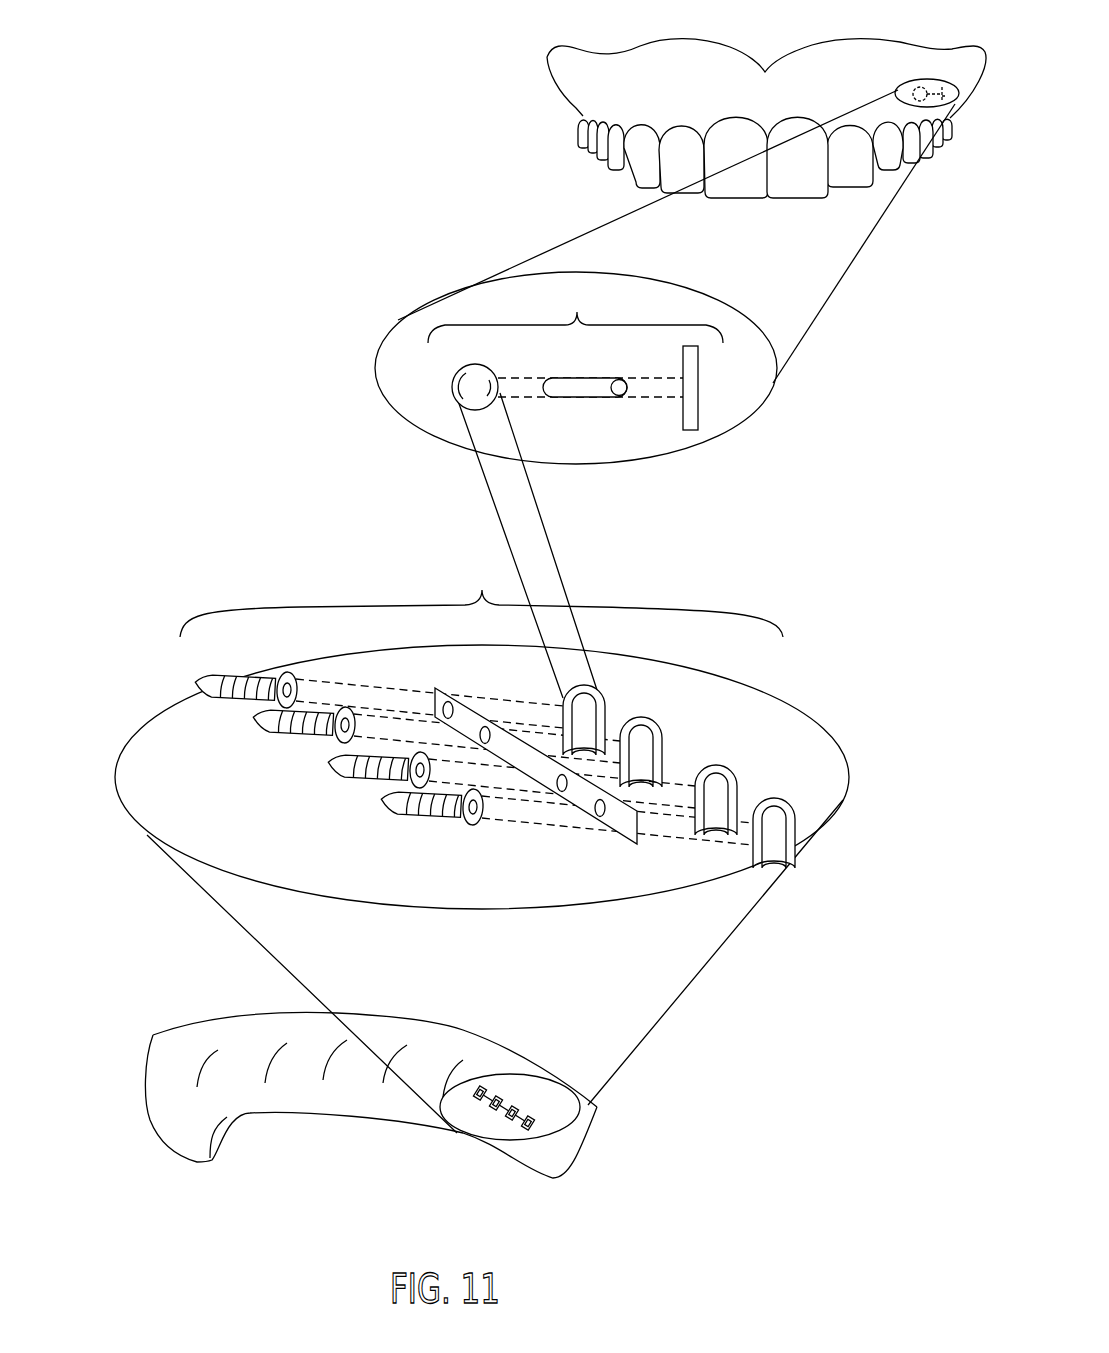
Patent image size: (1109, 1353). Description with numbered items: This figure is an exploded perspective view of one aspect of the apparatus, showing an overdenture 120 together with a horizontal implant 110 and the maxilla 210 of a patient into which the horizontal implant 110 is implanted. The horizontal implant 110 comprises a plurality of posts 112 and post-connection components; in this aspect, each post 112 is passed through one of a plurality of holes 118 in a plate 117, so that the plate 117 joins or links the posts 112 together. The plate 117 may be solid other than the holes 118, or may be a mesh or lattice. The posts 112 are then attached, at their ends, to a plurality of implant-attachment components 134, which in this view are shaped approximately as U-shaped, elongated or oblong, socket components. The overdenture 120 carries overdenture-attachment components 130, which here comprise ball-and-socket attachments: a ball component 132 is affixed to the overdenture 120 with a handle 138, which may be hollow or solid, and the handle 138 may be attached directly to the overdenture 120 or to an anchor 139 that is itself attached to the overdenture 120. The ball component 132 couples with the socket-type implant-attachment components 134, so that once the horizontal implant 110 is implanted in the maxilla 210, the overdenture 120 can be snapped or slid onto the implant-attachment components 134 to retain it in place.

The horizontal implant 110 is at (417, 1187).
The post 112 is at (393, 790).
The plate 117 is at (640, 833).
The holes 118 is at (470, 702).
The overdenture 120 is at (547, 57).
The overdenture-attachment components 130 is at (927, 83).
The ball component 132 is at (450, 383).
The implant-attachment components 134 is at (605, 707).
The handle 138 is at (582, 397).
The anchor 139 is at (702, 387).
The maxilla 210 is at (227, 1023).